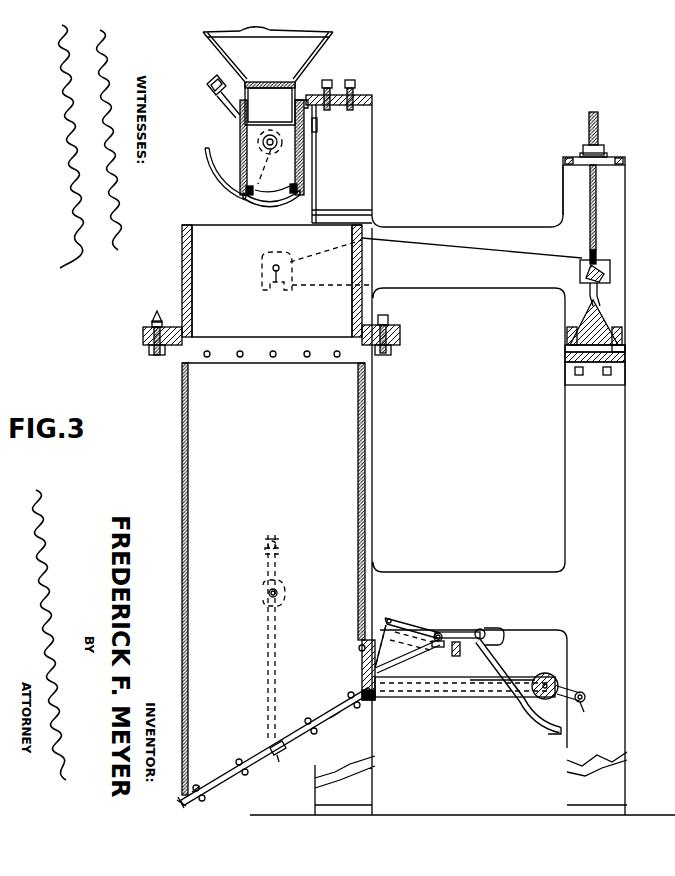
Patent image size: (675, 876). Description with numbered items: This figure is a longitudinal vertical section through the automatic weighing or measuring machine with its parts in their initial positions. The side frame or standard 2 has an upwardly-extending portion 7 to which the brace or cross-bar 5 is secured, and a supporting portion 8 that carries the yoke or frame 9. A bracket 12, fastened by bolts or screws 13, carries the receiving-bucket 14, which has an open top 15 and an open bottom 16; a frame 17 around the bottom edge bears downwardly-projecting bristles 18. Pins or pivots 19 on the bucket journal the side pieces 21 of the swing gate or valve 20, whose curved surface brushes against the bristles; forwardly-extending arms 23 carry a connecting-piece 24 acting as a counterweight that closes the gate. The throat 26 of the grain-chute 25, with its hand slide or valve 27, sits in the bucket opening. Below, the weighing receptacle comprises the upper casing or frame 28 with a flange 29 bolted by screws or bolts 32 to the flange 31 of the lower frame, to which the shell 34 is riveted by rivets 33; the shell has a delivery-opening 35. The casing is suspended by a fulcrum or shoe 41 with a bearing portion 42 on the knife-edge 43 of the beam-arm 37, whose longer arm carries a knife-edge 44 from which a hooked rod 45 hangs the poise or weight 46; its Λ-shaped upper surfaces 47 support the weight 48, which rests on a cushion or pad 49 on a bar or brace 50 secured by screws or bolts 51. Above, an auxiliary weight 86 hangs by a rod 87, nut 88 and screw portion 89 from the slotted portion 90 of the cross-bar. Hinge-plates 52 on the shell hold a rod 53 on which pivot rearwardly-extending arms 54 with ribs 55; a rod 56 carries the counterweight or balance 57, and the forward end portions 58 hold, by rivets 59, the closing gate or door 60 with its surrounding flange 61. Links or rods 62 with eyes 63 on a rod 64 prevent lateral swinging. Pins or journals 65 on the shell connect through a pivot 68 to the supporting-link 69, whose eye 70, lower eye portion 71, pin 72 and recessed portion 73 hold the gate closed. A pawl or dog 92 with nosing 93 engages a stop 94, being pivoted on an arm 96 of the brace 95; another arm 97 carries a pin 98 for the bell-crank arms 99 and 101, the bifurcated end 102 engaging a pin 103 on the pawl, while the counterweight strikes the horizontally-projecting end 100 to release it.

The side frame or standard 2 is at (630, 750).
The brace or cross-bar 5 is at (625, 160).
The upwardly-extending portion 7 is at (625, 178).
The supporting portion 8 is at (372, 208).
The yoke or frame 9 is at (372, 140).
The bracket 12 is at (317, 125).
The bolts or screws 13 is at (349, 83).
The receiving-bucket 14 is at (304, 162).
The open top 15 is at (242, 120).
The open bottom 16 is at (275, 182).
The frame 17 is at (300, 190).
The bristles 18 is at (285, 200).
The pins or pivots 19 is at (266, 145).
The swing gate or valve 20 is at (212, 178).
The side pieces 21 is at (227, 171).
The forwardly-extending arms 23 is at (232, 106).
The connecting-piece 24 is at (207, 84).
The grain-chute 25 is at (268, 54).
The throat 26 is at (270, 103).
The hand slide or valve 27 is at (268, 82).
The upper casing or frame 28 is at (272, 281).
The flange 29 is at (400, 331).
The flange of lower frame 31 is at (391, 349).
The screws or bolts 32 is at (404, 316).
The rivets 33 is at (172, 372).
The shell 34 is at (273, 579).
The delivery-opening 35 is at (248, 766).
The beam-arm 37 is at (472, 254).
The fulcrum or shoe 41 is at (262, 288).
The bearing or receiving portion 42 is at (277, 284).
The knife-edge 43 is at (280, 270).
The knife-edge 44 is at (600, 270).
The link or hooked rod 45 is at (600, 290).
The poise or weight 46 is at (565, 348).
The Λ-shaped upper surfaces 47 is at (616, 332).
The weight 48 is at (608, 315).
The cushion or pad 49 is at (625, 347).
The bar or brace 50 is at (625, 357).
The screws or bolts 51 is at (580, 375).
The hinge-plates 52 is at (362, 660).
The rod 53 is at (376, 697).
The rearwardly-extending arms 54 is at (472, 698).
The rib 55 is at (518, 677).
The rod 56 is at (568, 688).
The counterweight or balance 57 is at (547, 674).
The forward end portions 58 is at (338, 720).
The rivets 59 is at (206, 798).
The closing gate or door 60 is at (190, 779).
The surrounding flange 61 is at (180, 805).
The links or rods 62 is at (584, 692).
The eye 63 is at (586, 697).
The rod 64 is at (594, 715).
The pins or journals 65 is at (268, 592).
The pivot 68 is at (280, 550).
The supporting-link 69 is at (270, 690).
The eye 70 is at (275, 534).
The lower eye portion 71 is at (284, 752).
The bearing or pin 72 is at (290, 769).
The recessed or cut-away portion 73 is at (270, 598).
The auxiliary weight 86 is at (598, 258).
The rod 87 is at (605, 207).
The nut 88 is at (604, 147).
The screw portion 89 is at (589, 125).
The slotted portion 90 is at (580, 155).
The pivotal pawl or dog 92 is at (403, 646).
The nosing 93 is at (388, 669).
The stop 94 is at (360, 645).
The brace or piece 95 is at (454, 656).
The arm 96 is at (386, 615).
The arm 97 is at (504, 637).
The pivot or pin 98 is at (483, 630).
The arm of bell-crank 99 is at (490, 656).
The horizontally-projecting end 100 is at (555, 734).
The arm of bell-crank 101 is at (460, 632).
The bifurcated end 102 is at (437, 632).
The pin 103 is at (442, 636).